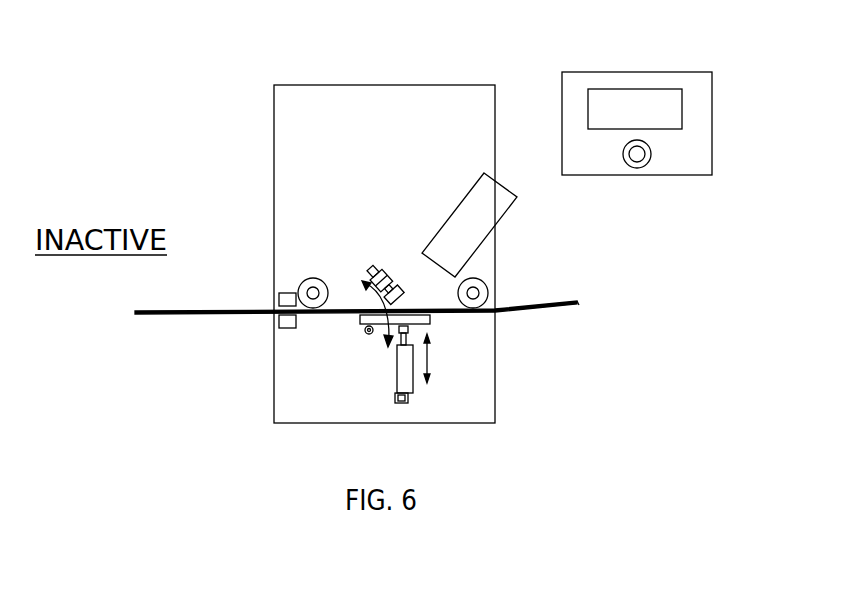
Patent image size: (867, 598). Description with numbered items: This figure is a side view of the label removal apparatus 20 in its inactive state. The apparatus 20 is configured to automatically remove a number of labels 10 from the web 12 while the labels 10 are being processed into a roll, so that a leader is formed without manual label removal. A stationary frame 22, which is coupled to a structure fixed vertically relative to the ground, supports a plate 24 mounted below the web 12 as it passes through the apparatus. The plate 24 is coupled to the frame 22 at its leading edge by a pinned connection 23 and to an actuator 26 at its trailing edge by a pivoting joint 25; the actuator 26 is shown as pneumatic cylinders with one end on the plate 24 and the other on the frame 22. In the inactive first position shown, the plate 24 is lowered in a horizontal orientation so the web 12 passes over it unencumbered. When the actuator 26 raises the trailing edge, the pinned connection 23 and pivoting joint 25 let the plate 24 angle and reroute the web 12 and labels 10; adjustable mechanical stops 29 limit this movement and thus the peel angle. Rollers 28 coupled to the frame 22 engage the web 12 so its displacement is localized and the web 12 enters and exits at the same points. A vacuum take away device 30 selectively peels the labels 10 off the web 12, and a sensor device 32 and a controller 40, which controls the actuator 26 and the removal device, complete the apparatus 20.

The labels 10 is at (567, 302).
The web 12 is at (580, 308).
The label removal apparatus 20 is at (336, 57).
The frame 22 is at (274, 418).
The pinned connection 23 is at (364, 331).
The plate 24 is at (430, 319).
The pivoting joint 25 is at (410, 335).
The actuator 26 is at (410, 382).
The rollers 28 is at (308, 280).
The mechanical stops 29 is at (382, 262).
The vacuum take away device 30 is at (500, 195).
The sensor device 32 is at (284, 293).
The controller 40 is at (698, 120).